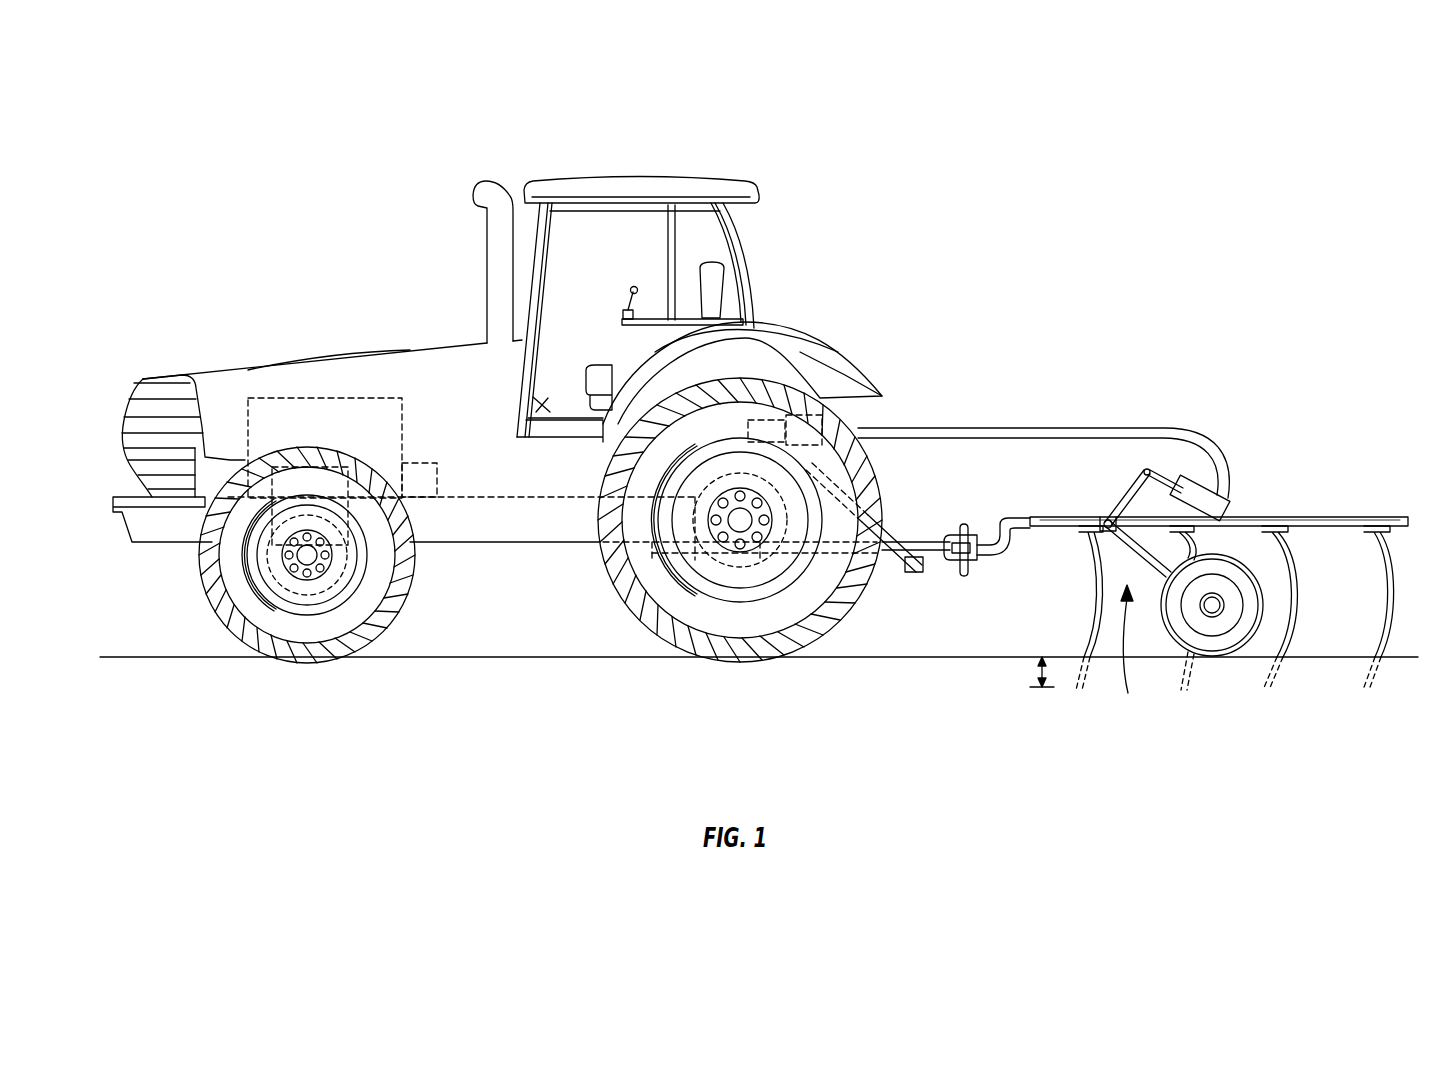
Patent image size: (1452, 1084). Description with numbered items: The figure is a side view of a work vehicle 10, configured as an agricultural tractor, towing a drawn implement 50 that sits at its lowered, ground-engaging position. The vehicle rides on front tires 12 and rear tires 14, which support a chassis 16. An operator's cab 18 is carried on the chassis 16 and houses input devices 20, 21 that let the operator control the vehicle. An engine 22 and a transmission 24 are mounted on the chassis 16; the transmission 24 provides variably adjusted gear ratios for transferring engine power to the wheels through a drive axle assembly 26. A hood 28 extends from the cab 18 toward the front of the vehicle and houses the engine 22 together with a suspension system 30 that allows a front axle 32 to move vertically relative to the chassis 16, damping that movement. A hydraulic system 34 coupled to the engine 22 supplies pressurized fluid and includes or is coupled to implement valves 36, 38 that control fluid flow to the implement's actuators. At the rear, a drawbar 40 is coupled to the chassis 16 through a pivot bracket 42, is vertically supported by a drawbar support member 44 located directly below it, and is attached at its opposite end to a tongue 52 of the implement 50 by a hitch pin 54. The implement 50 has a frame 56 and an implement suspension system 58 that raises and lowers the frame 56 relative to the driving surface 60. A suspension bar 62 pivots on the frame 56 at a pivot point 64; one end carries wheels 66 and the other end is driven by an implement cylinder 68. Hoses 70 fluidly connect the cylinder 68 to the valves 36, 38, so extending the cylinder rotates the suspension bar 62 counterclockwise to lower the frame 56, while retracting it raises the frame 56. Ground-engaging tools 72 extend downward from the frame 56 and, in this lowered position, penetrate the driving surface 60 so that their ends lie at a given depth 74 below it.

The work vehicle 10 is at (240, 233).
The front tires 12 is at (304, 555).
The rear tires 14 is at (838, 642).
The chassis 16 is at (530, 548).
The operator's cab 18 is at (668, 310).
The input device 20 is at (628, 288).
The input device 21 is at (541, 397).
The engine 22 is at (302, 395).
The transmission 24 is at (498, 497).
The drive axle assembly 26 is at (700, 565).
The hood 28 is at (432, 338).
The suspension system 30 is at (342, 458).
The front axle 32 is at (322, 575).
The hydraulic system 34 is at (432, 462).
The implement valve 36 is at (834, 362).
The implement valve 38 is at (800, 415).
The drawbar 40 is at (964, 527).
The pivot bracket 42 is at (660, 545).
The drawbar support member 44 is at (920, 572).
The drawn implement 50 is at (1232, 562).
The tongue 52 is at (1000, 550).
The hitch pin 54 is at (966, 525).
The frame 56 is at (1324, 517).
The implement suspension system 58 is at (1124, 651).
The driving surface 60 is at (1012, 656).
The suspension bar 62 is at (1142, 468).
The pivot point 64 is at (1106, 523).
The wheels 66 is at (1212, 655).
The implement cylinder 68 is at (1205, 512).
The hoses 70 is at (1040, 436).
The ground-engaging tools 72 is at (1092, 585).
The depth 74 is at (1038, 668).